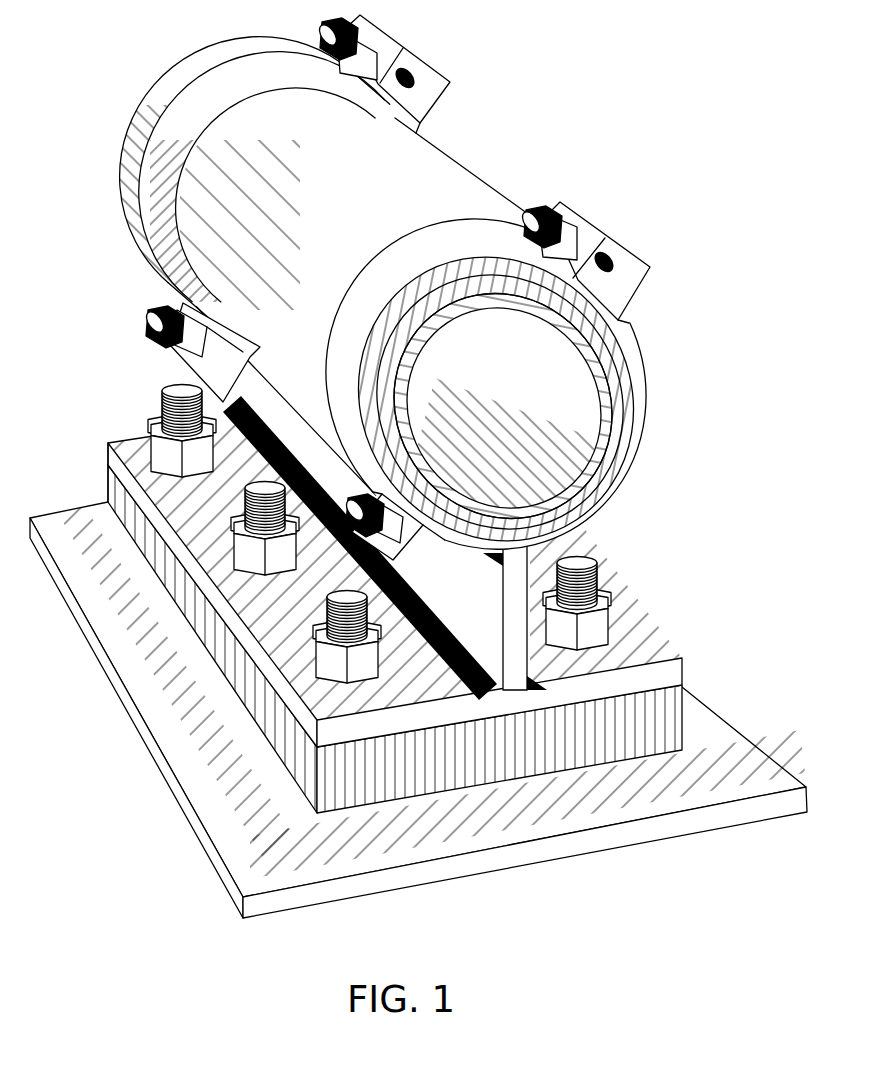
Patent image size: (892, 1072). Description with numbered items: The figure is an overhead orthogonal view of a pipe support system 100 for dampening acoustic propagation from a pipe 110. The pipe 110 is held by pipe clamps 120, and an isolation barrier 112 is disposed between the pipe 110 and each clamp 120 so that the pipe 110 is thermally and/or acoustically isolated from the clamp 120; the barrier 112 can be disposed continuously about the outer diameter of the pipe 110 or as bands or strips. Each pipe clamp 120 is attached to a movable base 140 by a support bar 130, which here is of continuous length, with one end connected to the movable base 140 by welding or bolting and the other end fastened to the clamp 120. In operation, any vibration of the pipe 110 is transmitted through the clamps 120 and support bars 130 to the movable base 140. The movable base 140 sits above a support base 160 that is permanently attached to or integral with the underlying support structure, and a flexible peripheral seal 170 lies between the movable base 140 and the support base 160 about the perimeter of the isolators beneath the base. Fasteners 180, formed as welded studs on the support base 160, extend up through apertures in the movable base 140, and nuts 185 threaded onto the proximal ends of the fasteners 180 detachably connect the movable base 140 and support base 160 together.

The pipe support system 100 is at (409, 466).
The pipe 110 is at (592, 425).
The isolation barrier 112 is at (622, 385).
The pipe clamp 120 is at (621, 346).
The support bar 130 is at (513, 630).
The movable base 140 is at (663, 677).
The support base 160 is at (722, 813).
The flexible peripheral seal 170 is at (663, 711).
The fastener 180 is at (578, 562).
The nut 185 is at (592, 626).